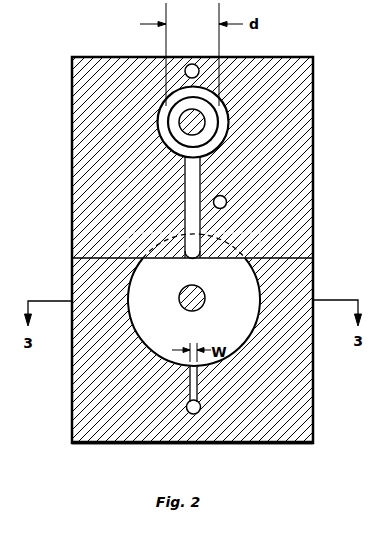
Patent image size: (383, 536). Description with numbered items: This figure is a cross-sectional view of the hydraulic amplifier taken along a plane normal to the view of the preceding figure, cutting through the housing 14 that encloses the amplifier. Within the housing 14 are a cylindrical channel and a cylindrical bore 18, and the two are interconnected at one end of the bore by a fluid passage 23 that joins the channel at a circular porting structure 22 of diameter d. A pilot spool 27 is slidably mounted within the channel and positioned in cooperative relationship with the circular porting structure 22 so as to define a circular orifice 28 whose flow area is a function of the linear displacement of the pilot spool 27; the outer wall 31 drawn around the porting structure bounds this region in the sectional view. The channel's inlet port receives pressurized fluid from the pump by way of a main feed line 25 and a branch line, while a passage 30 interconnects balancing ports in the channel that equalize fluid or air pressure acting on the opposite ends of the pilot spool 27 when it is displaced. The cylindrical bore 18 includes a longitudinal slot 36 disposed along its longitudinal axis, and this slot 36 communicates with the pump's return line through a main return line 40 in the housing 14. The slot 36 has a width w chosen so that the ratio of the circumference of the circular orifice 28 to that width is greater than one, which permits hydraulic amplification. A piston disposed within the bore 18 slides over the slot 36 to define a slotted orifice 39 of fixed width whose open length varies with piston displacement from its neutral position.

The housing 14 is at (313, 178).
The cylindrical bore 18 is at (259, 313).
The circular porting structure 22 is at (156, 117).
The fluid passage 23 is at (208, 163).
The main feed line 25 is at (225, 197).
The pilot spool 27 is at (213, 126).
The circular orifice 28 is at (156, 116).
The passage 30 is at (197, 64).
The outer wall 31 is at (228, 110).
The longitudinal slot 36 is at (198, 368).
The slotted orifice 39 is at (189, 363).
The main return line 40 is at (201, 404).